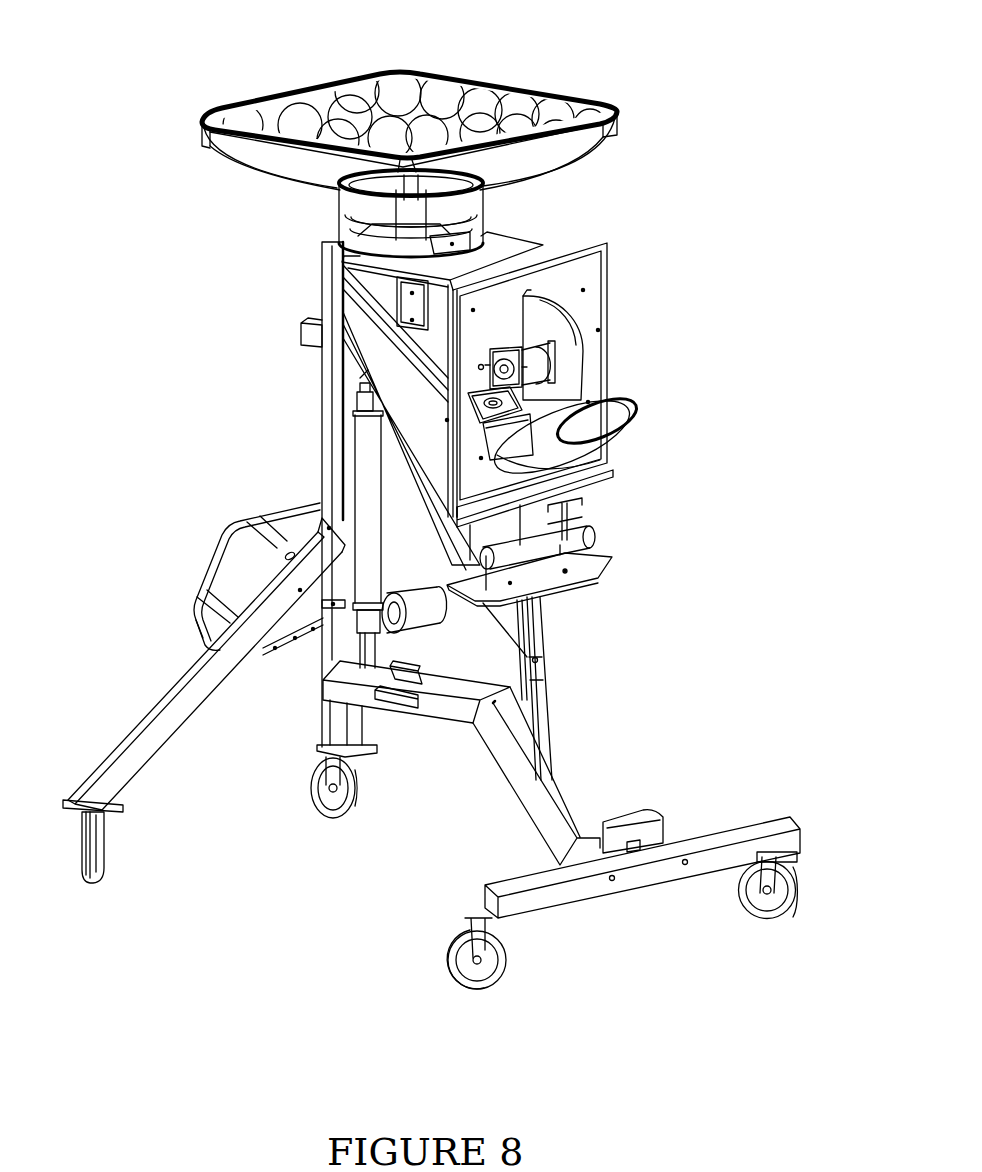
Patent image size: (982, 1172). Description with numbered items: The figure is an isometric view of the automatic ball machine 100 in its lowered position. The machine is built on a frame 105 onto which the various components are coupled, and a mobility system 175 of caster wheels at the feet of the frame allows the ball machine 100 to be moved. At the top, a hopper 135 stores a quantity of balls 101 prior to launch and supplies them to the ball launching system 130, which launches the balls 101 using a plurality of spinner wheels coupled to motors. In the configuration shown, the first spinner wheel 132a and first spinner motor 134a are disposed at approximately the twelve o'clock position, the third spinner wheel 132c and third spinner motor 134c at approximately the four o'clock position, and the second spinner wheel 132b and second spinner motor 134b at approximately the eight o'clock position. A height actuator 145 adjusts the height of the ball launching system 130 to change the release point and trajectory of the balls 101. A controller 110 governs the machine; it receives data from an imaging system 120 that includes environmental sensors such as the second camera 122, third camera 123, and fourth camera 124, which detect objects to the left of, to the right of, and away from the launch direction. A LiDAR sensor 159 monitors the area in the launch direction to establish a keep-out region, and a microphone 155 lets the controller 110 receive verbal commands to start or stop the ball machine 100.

The automatic ball machine 100 is at (152, 74).
The balls 101 is at (357, 87).
The frame 105 is at (530, 650).
The controller 110 is at (232, 563).
The imaging system 120 is at (616, 555).
The second camera 122 is at (396, 668).
The third camera 123 is at (397, 706).
The fourth camera 124 is at (318, 334).
The ball launching system 130 is at (517, 389).
The first spinner wheel 132a is at (557, 333).
The second spinner wheel 132b is at (470, 468).
The third spinner wheel 132c is at (610, 447).
The first spinner motor 134a is at (533, 367).
The second spinner motor 134b is at (357, 393).
The third spinner motor 134c is at (593, 407).
The hopper 135 is at (490, 86).
The height actuator 145 is at (360, 499).
The microphone 155 is at (200, 628).
The LiDAR sensor 159 is at (606, 521).
The mobility system 175 is at (116, 866).